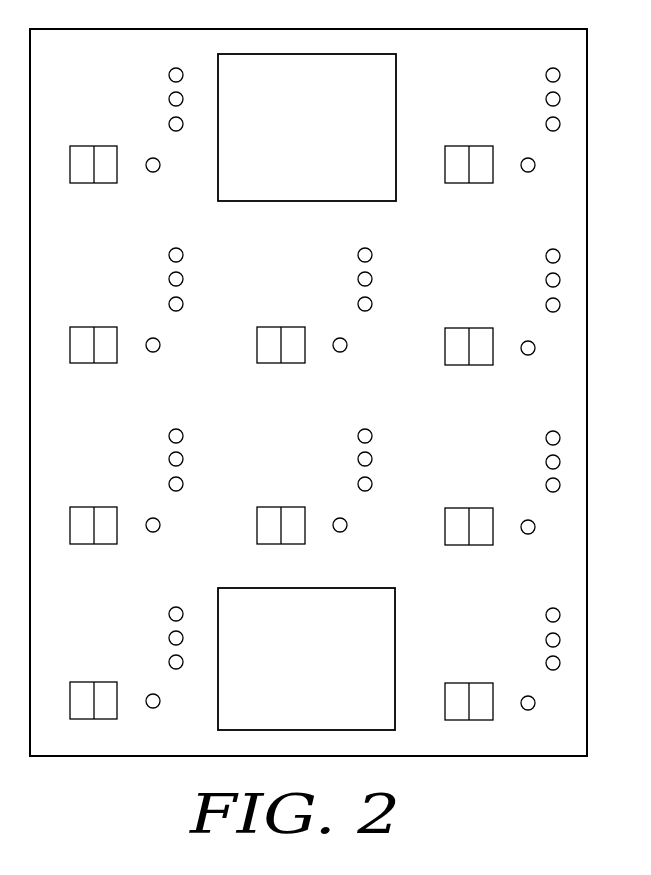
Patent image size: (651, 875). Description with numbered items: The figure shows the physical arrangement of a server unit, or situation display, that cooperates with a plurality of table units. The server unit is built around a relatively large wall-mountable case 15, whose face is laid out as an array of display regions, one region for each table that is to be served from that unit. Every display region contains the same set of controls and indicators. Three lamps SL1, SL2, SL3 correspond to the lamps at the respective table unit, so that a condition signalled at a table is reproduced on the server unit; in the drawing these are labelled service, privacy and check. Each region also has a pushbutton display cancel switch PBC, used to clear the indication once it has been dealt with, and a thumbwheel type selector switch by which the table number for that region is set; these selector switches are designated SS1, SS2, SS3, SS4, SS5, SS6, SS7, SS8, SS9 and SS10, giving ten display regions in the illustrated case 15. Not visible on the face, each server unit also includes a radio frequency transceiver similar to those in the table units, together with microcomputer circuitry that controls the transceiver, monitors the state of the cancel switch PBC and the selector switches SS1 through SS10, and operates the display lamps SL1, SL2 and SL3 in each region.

The wall-mountable case 15 is at (587, 340).
The thumbwheel type selector switch SS1 is at (70, 164).
The thumbwheel type selector switch SS2 is at (70, 341).
The thumbwheel type selector switch SS3 is at (70, 523).
The thumbwheel type selector switch SS4 is at (70, 698).
The thumbwheel type selector switch SS5 is at (257, 341).
The thumbwheel type selector switch SS6 is at (257, 523).
The thumbwheel type selector switch SS7 is at (445, 167).
The thumbwheel type selector switch SS8 is at (445, 343).
The thumbwheel type selector switch SS9 is at (445, 528).
The thumbwheel type selector switch SS10 is at (445, 701).
The display lamp SL1 is at (181, 70).
The display lamp SL2 is at (183, 98).
The display lamp SL3 is at (183, 124).
The pushbutton display cancel switch PBC is at (159, 161).